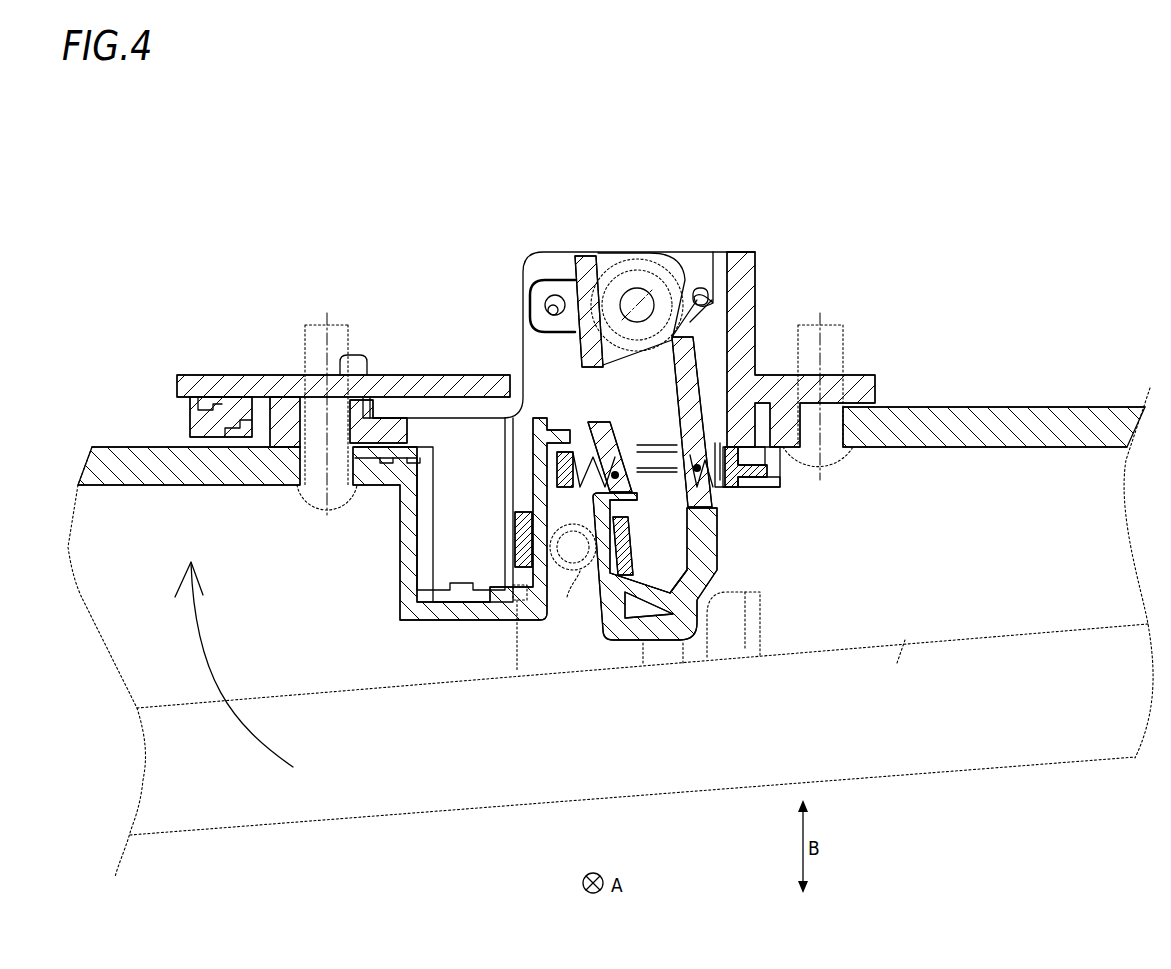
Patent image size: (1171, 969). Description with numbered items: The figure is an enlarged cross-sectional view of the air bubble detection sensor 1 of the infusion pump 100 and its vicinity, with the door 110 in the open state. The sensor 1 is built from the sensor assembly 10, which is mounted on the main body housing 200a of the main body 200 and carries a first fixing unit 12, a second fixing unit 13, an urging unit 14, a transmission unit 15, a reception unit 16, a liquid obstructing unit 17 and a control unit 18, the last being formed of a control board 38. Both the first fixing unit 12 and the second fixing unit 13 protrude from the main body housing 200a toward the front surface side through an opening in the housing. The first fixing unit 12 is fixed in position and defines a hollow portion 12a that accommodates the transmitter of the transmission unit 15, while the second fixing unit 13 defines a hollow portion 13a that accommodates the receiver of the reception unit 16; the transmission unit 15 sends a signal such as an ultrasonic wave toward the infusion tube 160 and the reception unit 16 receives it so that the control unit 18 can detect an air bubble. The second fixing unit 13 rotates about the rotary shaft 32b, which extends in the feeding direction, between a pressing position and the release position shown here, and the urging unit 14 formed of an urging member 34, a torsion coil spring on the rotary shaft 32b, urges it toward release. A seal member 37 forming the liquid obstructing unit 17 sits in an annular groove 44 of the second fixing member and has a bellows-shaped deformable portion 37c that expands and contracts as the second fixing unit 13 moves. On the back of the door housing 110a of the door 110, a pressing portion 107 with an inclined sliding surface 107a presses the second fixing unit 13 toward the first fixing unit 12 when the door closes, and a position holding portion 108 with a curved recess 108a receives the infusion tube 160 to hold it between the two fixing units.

The air bubble detection sensor 1 is at (804, 536).
The sensor assembly 10 is at (806, 239).
The first fixing unit 12 is at (461, 536).
The hollow portion 12a is at (456, 530).
The second fixing unit 13 is at (686, 566).
The hollow portion 13a is at (668, 559).
The urging unit 14 is at (649, 278).
The transmission unit 15 is at (513, 537).
The reception unit 16 is at (637, 528).
The liquid obstructing unit 17 is at (790, 483).
The control unit 18 is at (343, 362).
The rotary shaft 32b is at (610, 290).
The urging member 34 is at (642, 290).
The seal member 37 is at (724, 492).
The deformable portion 37c is at (622, 437).
The control board 38 is at (437, 385).
The annular groove 44 is at (702, 435).
The infusion pump 100 is at (1088, 540).
The pressing portion 107 is at (753, 650).
The sliding surface 107a is at (722, 655).
The position holding portion 108 is at (511, 648).
The curved recess 108a is at (567, 597).
The door 110 is at (1013, 626).
The door housing 110a is at (897, 663).
The infusion tube 160 is at (593, 572).
The main body 200 is at (611, 475).
The main body housing 200a is at (230, 472).